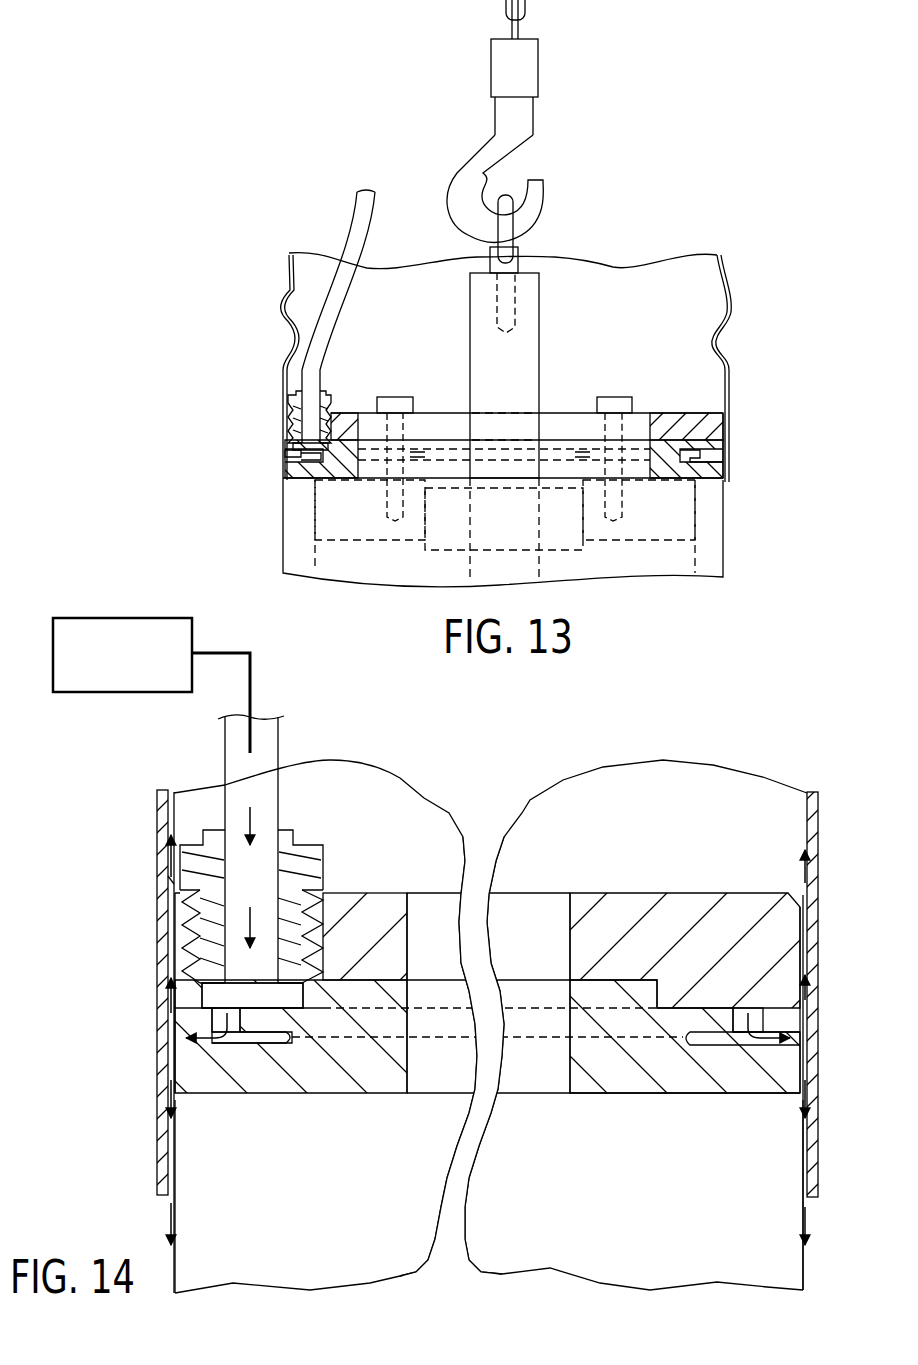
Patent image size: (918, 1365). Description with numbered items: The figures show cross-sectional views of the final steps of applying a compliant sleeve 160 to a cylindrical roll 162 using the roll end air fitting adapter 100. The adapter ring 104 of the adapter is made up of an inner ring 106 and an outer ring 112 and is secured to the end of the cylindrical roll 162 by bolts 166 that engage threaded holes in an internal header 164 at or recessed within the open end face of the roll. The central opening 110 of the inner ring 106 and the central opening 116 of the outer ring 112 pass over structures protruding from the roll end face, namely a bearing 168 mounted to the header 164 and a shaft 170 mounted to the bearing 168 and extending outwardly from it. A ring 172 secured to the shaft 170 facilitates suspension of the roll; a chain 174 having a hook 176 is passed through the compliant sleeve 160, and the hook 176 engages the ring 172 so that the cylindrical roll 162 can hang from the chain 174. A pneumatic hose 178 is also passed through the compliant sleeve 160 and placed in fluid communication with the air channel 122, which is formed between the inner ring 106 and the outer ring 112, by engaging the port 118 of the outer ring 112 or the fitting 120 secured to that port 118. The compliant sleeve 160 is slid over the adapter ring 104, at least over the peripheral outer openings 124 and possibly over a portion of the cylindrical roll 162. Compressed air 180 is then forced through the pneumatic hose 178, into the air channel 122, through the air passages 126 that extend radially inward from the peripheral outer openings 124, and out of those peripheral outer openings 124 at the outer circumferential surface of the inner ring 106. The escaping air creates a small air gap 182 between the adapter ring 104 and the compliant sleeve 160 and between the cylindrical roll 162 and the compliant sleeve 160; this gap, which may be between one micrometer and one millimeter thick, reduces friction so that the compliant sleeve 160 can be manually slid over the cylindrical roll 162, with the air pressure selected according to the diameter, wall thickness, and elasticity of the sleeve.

In FIG. 13, the roll end air fitting adapter 100 is at (622, 293).
In FIG. 14, the roll end air fitting adapter 100 is at (507, 790).
In FIG. 13, the adapter ring 104 is at (710, 487).
In FIG. 14, the adapter ring 104 is at (752, 1098).
In FIG. 13, the inner ring 106 is at (358, 483).
In FIG. 14, the inner ring 106 is at (608, 1073).
In FIG. 13, the central opening 110 is at (645, 465).
In FIG. 13, the outer ring 112 is at (345, 423).
In FIG. 14, the outer ring 112 is at (622, 915).
In FIG. 13, the central opening 116 is at (643, 427).
In FIG. 14, the port 118 is at (318, 845).
In FIG. 14, the fitting 120 is at (312, 950).
In FIG. 13, the air channel 122 is at (300, 455).
In FIG. 14, the air channel 122 is at (213, 1018).
In FIG. 14, the peripheral outer openings 124 is at (173, 1040).
In FIG. 14, the air passages 126 is at (262, 1050).
In FIG. 13, the compliant sleeve 160 is at (282, 300).
In FIG. 14, the compliant sleeve 160 is at (160, 925).
In FIG. 13, the cylindrical roll 162 is at (285, 520).
In FIG. 14, the cylindrical roll 162 is at (322, 1198).
In FIG. 13, the internal header 164 is at (684, 515).
In FIG. 13, the bolts 166 is at (605, 395).
In FIG. 13, the bearing 168 is at (572, 538).
In FIG. 13, the shaft 170 is at (485, 333).
In FIG. 13, the ring 172 is at (508, 193).
In FIG. 13, the chain 174 is at (525, 8).
In FIG. 13, the hook 176 is at (462, 165).
In FIG. 13, the pneumatic hose 178 is at (352, 227).
In FIG. 14, the pneumatic hose 178 is at (278, 740).
In FIG. 14, the compressed air 180 is at (135, 618).
In FIG. 14, the air gap 182 is at (174, 882).